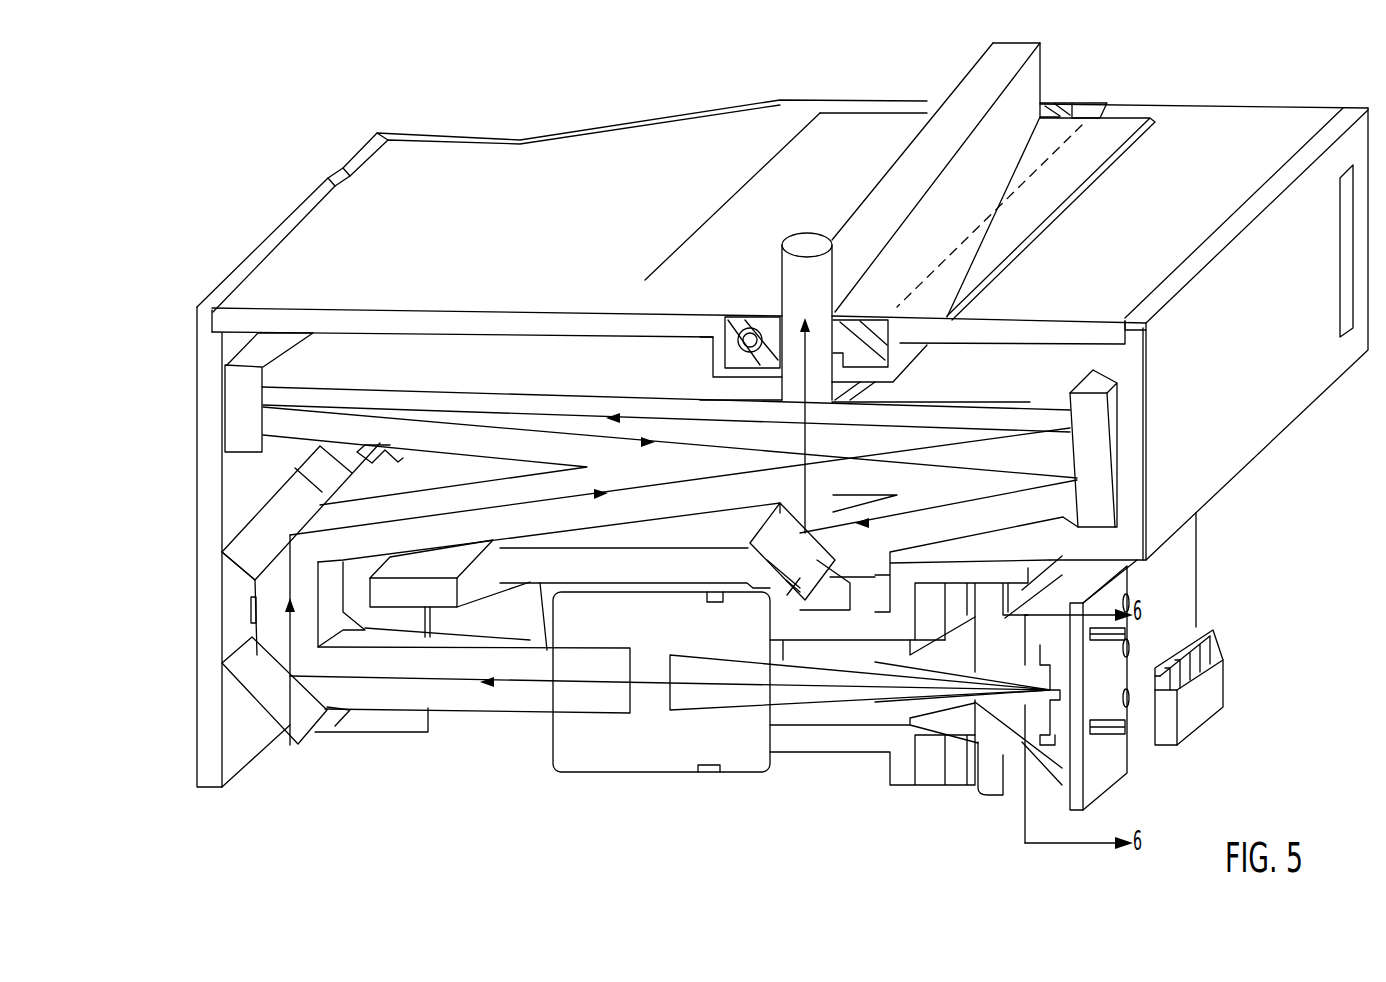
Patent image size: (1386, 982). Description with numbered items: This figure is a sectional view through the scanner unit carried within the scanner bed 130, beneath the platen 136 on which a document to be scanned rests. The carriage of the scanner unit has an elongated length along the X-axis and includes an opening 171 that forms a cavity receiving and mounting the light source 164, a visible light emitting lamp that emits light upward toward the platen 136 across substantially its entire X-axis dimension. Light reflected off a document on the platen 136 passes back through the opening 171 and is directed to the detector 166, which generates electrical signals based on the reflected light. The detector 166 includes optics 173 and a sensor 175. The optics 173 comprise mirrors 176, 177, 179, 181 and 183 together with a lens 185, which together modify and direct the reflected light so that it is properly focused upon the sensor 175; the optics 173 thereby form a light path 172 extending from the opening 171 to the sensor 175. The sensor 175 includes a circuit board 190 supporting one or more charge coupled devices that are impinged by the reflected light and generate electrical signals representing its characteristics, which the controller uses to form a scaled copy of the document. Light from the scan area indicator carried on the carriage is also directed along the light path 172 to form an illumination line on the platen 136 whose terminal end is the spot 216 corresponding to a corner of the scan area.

The bed 130 is at (1226, 94).
The platen 136 is at (505, 190).
The light source 164 is at (753, 335).
The detector 166 is at (598, 782).
The opening 171 is at (735, 328).
The light path 172 is at (1020, 97).
The optics 173 is at (235, 575).
The sensor 175 is at (1218, 580).
The mirror 176 is at (797, 567).
The mirror 177 is at (1093, 442).
The mirror 179 is at (238, 413).
The mirror 181 is at (262, 535).
The mirror 183 is at (293, 727).
The lens 185 is at (750, 765).
The circuit board 190 is at (1187, 610).
The illumination spot 216 is at (813, 240).